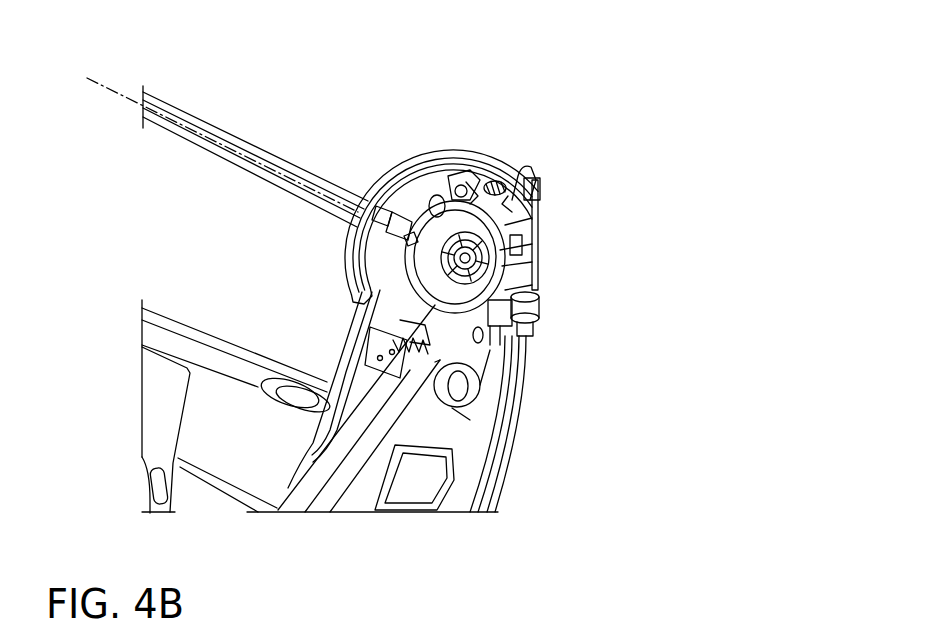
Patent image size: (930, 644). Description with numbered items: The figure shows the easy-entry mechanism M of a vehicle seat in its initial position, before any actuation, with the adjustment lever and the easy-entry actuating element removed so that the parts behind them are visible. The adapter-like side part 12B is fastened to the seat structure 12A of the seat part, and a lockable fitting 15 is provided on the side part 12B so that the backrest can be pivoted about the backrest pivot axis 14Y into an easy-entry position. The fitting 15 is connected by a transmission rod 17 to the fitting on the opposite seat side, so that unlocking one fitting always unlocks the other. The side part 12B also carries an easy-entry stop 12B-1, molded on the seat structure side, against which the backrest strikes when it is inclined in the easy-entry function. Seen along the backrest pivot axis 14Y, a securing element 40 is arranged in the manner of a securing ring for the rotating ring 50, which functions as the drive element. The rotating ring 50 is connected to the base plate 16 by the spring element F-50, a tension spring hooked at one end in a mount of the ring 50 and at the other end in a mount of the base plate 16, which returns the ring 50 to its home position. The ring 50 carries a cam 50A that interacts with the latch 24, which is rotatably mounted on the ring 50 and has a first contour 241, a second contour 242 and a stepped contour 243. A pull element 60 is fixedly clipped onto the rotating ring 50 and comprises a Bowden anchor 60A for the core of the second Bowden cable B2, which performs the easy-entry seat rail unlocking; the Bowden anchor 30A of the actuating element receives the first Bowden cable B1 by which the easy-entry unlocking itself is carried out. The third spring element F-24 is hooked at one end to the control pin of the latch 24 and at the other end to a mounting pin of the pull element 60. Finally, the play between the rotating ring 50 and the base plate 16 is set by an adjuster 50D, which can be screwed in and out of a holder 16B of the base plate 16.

The backrest pivot axis 14Y is at (112, 88).
The transmission rod 17 is at (208, 143).
The lockable fitting 15 is at (452, 153).
The second contour 242 is at (418, 215).
The easy-entry stop 12B-1 is at (388, 218).
The stepped contour 243 is at (438, 187).
The latch 24 is at (459, 177).
The first contour 241 is at (465, 192).
The third spring element F-24 is at (488, 182).
The easy-entry mechanism M is at (698, 78).
The Bowden anchor 60A is at (537, 160).
The Bowden anchor 30A is at (533, 202).
The pull element 60 is at (522, 222).
The securing element 40 is at (487, 252).
The holder 16B is at (507, 305).
The adjuster 50D is at (498, 318).
The spring element F-50 is at (418, 348).
The first Bowden cable B1 is at (503, 443).
The second Bowden cable B2 is at (478, 485).
The cam 50A is at (409, 237).
The rotating ring 50 is at (385, 264).
The base plate 16 is at (387, 335).
The side part 12B is at (337, 370).
The seat structure 12A is at (313, 497).